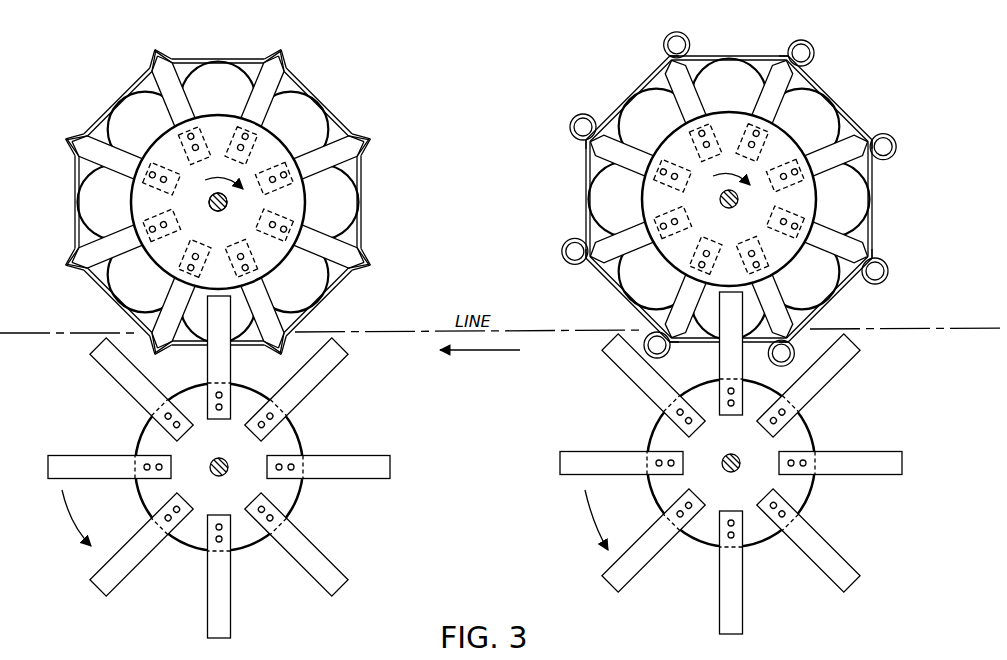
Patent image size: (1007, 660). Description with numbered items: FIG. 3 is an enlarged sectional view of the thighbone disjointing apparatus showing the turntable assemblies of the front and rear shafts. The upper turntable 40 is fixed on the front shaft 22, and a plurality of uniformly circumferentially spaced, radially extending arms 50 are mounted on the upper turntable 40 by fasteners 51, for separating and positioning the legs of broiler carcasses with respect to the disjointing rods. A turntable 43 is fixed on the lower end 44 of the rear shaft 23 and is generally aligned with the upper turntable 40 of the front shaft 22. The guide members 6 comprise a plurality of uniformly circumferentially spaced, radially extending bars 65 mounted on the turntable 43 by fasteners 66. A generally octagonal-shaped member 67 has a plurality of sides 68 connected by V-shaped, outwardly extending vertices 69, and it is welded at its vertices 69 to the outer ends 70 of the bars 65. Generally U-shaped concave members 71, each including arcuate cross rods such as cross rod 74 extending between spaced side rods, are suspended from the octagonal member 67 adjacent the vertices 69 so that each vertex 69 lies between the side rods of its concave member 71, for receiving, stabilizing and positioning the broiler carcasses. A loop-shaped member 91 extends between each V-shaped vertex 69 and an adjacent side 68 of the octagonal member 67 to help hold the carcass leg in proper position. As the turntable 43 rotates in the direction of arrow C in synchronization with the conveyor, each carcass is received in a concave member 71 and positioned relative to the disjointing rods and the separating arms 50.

The guide members 6 is at (110, 85).
The front shaft 22 is at (228, 462).
The rear shaft 23 is at (226, 210).
The upper turntable 40 is at (479, 465).
The turntable 43 is at (275, 153).
The lower end 44 is at (210, 202).
The arms 50 is at (90, 462).
The fasteners 51 is at (162, 506).
The bars 65 is at (262, 306).
The fasteners 66 is at (193, 258).
The octagonal-shaped member 67 is at (224, 54).
The sides 68 is at (360, 207).
The vertices 69 is at (283, 58).
The outer ends 70 is at (165, 62).
The concave member 71 is at (188, 76).
The cross rod 74 is at (147, 97).
The loop-shaped member 91 is at (812, 52).